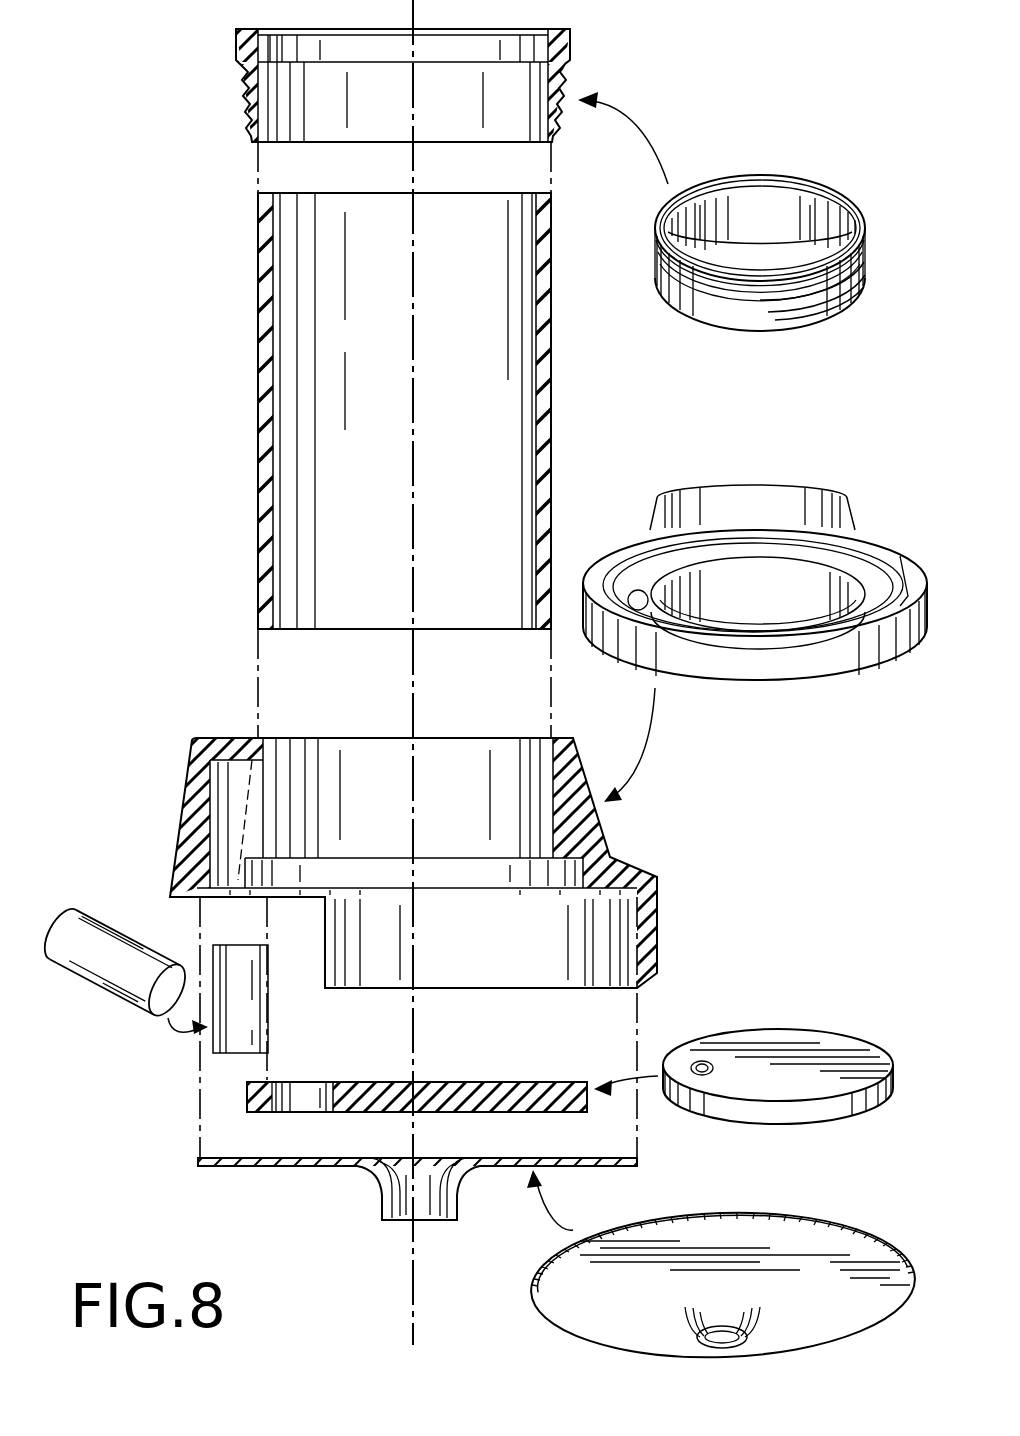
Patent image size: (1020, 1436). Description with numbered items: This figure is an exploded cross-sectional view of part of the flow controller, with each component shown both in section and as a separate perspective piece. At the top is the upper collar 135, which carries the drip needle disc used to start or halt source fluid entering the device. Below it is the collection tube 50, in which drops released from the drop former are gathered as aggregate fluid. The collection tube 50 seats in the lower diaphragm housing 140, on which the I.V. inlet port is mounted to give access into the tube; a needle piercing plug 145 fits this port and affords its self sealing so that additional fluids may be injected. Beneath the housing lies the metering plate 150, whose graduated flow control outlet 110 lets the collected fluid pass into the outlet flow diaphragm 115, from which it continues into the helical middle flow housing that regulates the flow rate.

The collection tube 50 is at (422, 417).
The graduated flow control outlet 110 is at (298, 1082).
The outlet flow diaphragm 115 is at (245, 1168).
The upper collar 135 is at (550, 27).
The lower diaphragm housing 140 is at (207, 730).
The needle piercing plug 145 is at (114, 961).
The metering plate 150 is at (470, 1072).